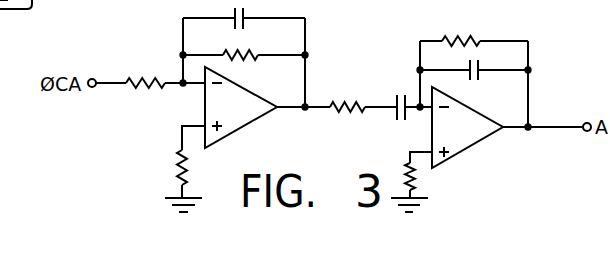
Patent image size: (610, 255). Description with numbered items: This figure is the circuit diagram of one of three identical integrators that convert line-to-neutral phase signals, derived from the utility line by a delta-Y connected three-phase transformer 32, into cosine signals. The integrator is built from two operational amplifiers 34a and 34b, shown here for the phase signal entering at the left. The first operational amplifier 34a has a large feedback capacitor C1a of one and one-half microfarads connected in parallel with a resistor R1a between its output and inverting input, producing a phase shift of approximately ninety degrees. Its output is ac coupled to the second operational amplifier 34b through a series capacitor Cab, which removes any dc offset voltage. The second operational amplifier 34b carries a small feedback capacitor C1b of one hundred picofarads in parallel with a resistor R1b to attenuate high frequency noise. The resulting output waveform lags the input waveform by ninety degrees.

The 3-phase transformer 32 is at (90, 0).
The first operational amplifier 34a is at (242, 129).
The second operational amplifier 34b is at (474, 145).
The resistor R1a is at (232, 58).
The feedback capacitor C1a is at (238, 6).
The capacitor Cab is at (400, 91).
The resistor R1b is at (458, 34).
The small capacitor C1b is at (473, 82).